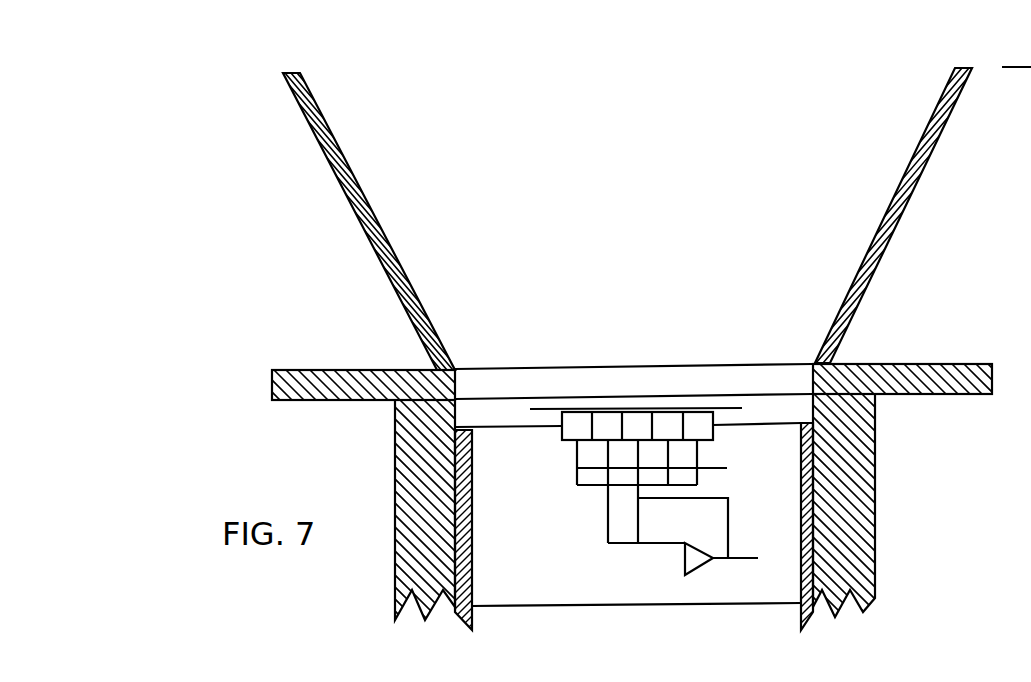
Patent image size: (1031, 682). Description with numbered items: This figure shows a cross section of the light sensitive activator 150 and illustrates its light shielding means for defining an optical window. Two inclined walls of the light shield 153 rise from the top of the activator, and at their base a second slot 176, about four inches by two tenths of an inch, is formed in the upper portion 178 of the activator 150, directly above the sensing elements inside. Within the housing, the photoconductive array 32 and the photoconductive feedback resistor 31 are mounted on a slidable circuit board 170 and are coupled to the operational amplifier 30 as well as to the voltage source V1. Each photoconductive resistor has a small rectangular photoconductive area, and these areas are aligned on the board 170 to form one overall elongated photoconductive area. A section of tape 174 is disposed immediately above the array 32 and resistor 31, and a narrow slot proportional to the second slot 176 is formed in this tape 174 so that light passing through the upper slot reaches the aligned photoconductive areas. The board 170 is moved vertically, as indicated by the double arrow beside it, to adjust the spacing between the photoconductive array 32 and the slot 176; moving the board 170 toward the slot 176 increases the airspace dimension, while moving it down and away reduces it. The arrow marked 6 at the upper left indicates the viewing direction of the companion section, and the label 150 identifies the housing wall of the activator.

The section view direction indicator 6 is at (255, 76).
The light shield 153 is at (399, 262).
The upper portion 178 is at (378, 370).
The second slot 176 is at (659, 377).
The light sensitive activator 150 is at (887, 505).
The tape 174 is at (533, 409).
The photoconductive feedback resistor 31 is at (648, 435).
The photoconductive array 32 is at (540, 477).
The voltage source V1 is at (667, 458).
The slidable circuit board 170 is at (547, 540).
The operational amplifier 30 is at (690, 563).